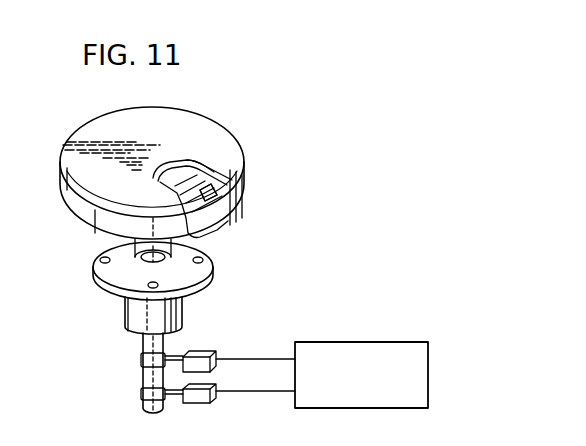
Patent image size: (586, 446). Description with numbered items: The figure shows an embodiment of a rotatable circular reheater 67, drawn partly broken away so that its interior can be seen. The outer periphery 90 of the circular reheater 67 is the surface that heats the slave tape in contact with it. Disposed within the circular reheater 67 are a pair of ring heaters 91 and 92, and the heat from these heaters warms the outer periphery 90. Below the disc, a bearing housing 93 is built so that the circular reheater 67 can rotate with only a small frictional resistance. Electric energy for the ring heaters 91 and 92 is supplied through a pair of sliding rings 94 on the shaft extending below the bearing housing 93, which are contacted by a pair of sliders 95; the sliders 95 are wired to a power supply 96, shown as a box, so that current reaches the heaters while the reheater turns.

The circular reheater 67 is at (202, 117).
The outer periphery 90 is at (232, 221).
The ring heater 91 is at (200, 175).
The ring heater 92 is at (207, 190).
The bearing housing 93 is at (182, 306).
The sliding rings 94 is at (141, 360).
The sliders 95 is at (200, 352).
The power supply 96 is at (332, 341).